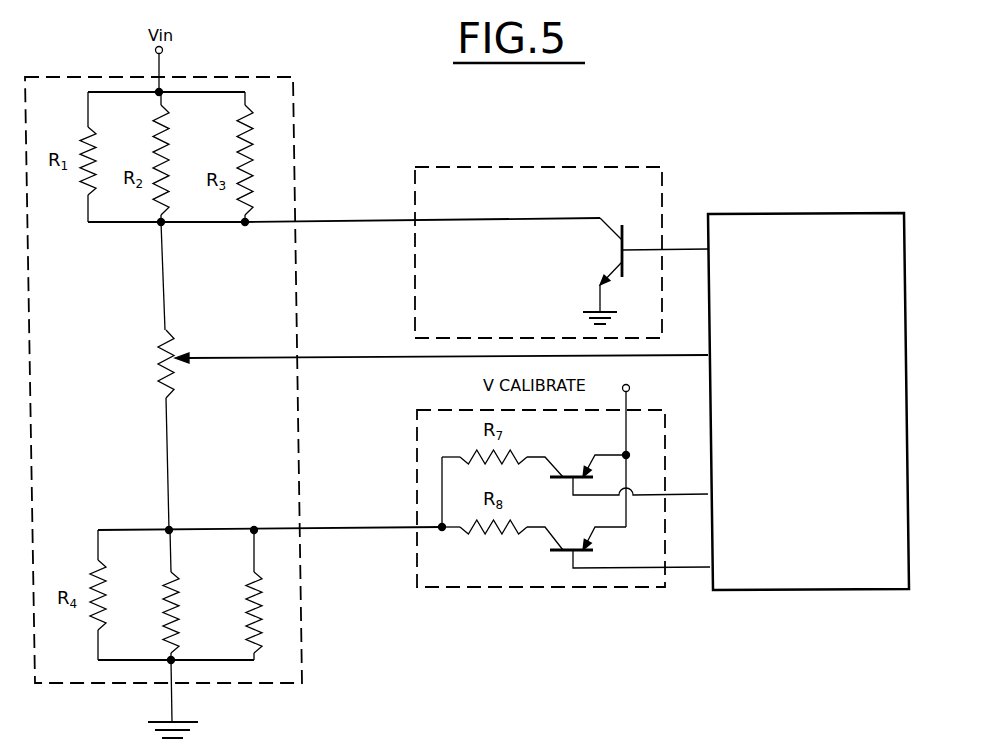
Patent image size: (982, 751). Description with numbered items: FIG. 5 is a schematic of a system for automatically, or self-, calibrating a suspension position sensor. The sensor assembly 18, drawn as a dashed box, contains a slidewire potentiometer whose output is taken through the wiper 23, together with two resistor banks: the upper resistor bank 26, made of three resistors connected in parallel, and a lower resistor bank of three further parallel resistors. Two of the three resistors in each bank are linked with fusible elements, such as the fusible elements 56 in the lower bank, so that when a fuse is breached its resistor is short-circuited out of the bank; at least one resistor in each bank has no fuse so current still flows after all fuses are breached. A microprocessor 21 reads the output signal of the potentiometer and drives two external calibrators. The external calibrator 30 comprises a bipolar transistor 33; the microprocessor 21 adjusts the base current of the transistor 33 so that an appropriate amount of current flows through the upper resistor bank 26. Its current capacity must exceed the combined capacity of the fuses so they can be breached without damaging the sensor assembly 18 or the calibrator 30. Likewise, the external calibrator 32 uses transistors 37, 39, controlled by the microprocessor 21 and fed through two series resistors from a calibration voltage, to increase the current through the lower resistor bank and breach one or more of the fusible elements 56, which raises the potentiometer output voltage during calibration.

The sensor assembly 18 is at (194, 380).
The upper resistor bank 26 is at (218, 92).
The wiper 23 is at (232, 358).
The fusible elements 56 is at (253, 556).
The external calibrator 30 is at (593, 165).
The bipolar transistor 33 is at (605, 218).
The external calibrator 32 is at (492, 588).
The transistor 37 is at (603, 453).
The transistor 39 is at (567, 555).
The microprocessor 21 is at (782, 591).